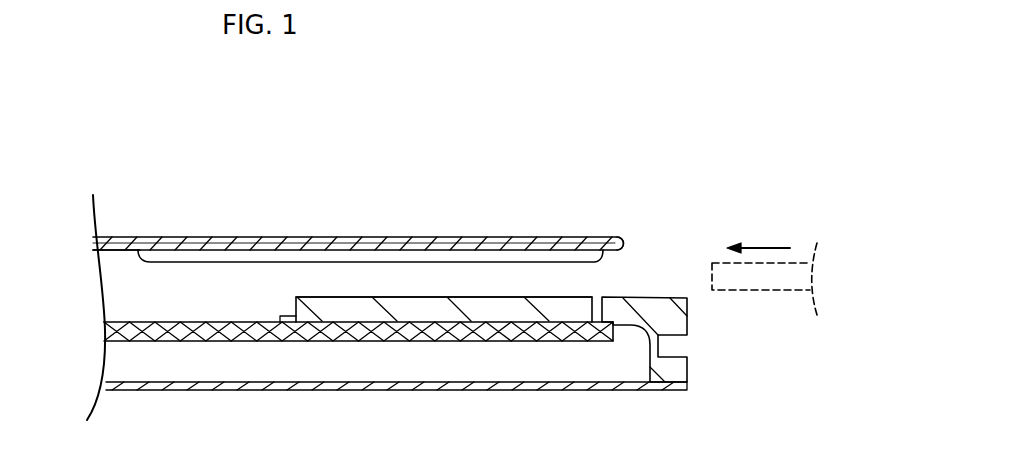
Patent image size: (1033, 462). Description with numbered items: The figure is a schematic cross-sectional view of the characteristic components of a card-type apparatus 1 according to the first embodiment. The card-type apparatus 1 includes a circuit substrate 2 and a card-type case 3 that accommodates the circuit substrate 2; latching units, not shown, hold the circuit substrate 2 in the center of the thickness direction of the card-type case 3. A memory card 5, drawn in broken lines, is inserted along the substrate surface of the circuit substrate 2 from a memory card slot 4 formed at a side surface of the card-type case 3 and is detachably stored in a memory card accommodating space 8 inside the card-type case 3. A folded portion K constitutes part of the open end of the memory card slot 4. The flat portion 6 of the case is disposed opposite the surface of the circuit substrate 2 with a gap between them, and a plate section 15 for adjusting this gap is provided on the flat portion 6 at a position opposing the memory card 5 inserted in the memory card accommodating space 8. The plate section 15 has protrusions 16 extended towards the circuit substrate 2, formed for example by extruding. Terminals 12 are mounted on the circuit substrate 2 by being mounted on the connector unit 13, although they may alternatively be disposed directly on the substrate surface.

The card-type apparatus 1 is at (578, 134).
The circuit substrate 2 is at (290, 333).
The card-type case 3 is at (378, 235).
The memory card slot 4 is at (608, 278).
The memory card 5 is at (767, 285).
The flat portion 6 is at (251, 237).
The memory card accommodating space 8 is at (183, 295).
The terminals 12 is at (297, 284).
The connector unit 13 is at (442, 310).
The plate section 15 is at (129, 248).
The protrusions 16 is at (240, 258).
The folded portion K is at (632, 241).